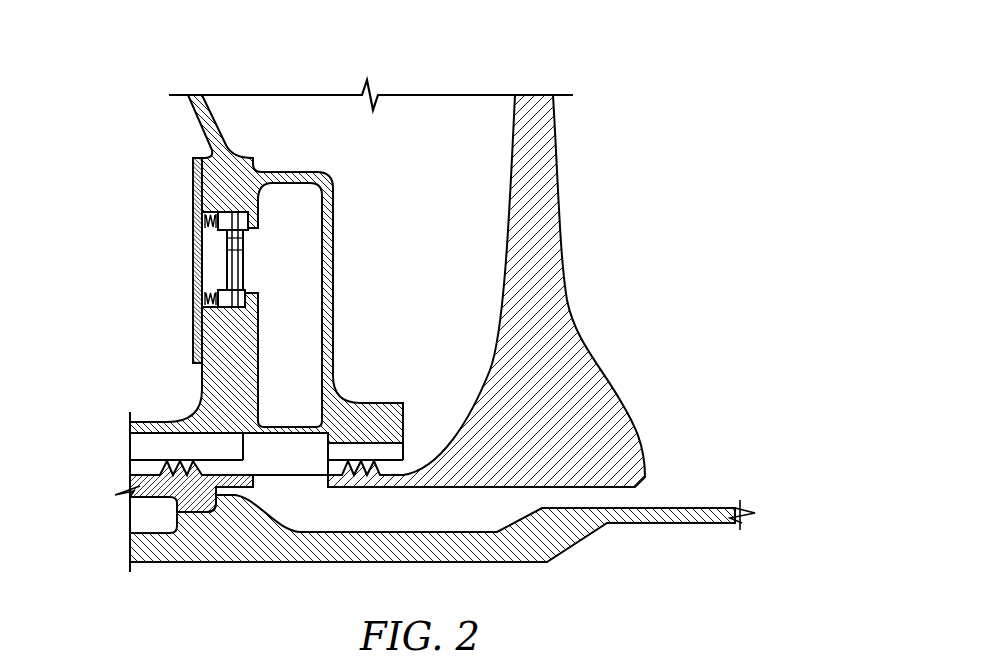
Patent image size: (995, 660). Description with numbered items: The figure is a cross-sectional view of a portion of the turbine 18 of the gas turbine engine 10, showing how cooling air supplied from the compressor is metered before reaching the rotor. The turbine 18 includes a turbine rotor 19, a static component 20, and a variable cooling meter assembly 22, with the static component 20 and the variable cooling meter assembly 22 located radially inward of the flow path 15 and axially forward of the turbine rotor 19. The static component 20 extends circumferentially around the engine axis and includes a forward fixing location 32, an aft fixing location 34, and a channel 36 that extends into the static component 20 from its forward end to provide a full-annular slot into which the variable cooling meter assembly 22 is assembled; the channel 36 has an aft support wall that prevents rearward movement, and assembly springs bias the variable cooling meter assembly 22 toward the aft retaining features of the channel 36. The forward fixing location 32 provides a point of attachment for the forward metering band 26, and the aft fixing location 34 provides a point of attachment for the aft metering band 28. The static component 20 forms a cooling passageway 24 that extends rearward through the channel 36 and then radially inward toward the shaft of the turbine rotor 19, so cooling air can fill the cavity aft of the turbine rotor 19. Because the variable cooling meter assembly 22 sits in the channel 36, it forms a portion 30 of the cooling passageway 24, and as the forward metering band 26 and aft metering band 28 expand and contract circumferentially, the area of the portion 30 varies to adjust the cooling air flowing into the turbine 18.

The gas turbine engine 10 is at (621, 43).
The flow path 15 is at (157, 68).
The turbine 18 is at (610, 92).
The turbine rotor 19 is at (543, 298).
The static component 20 is at (208, 170).
The variable cooling meter assembly 22 is at (182, 200).
The cooling passageway 24 is at (290, 388).
The forward metering band 26 is at (238, 249).
The aft metering band 28 is at (238, 260).
The portion of the cooling passageway 30 is at (208, 271).
The forward fixing location 32 is at (213, 200).
The aft fixing location 34 is at (264, 215).
The channel 36 is at (212, 321).